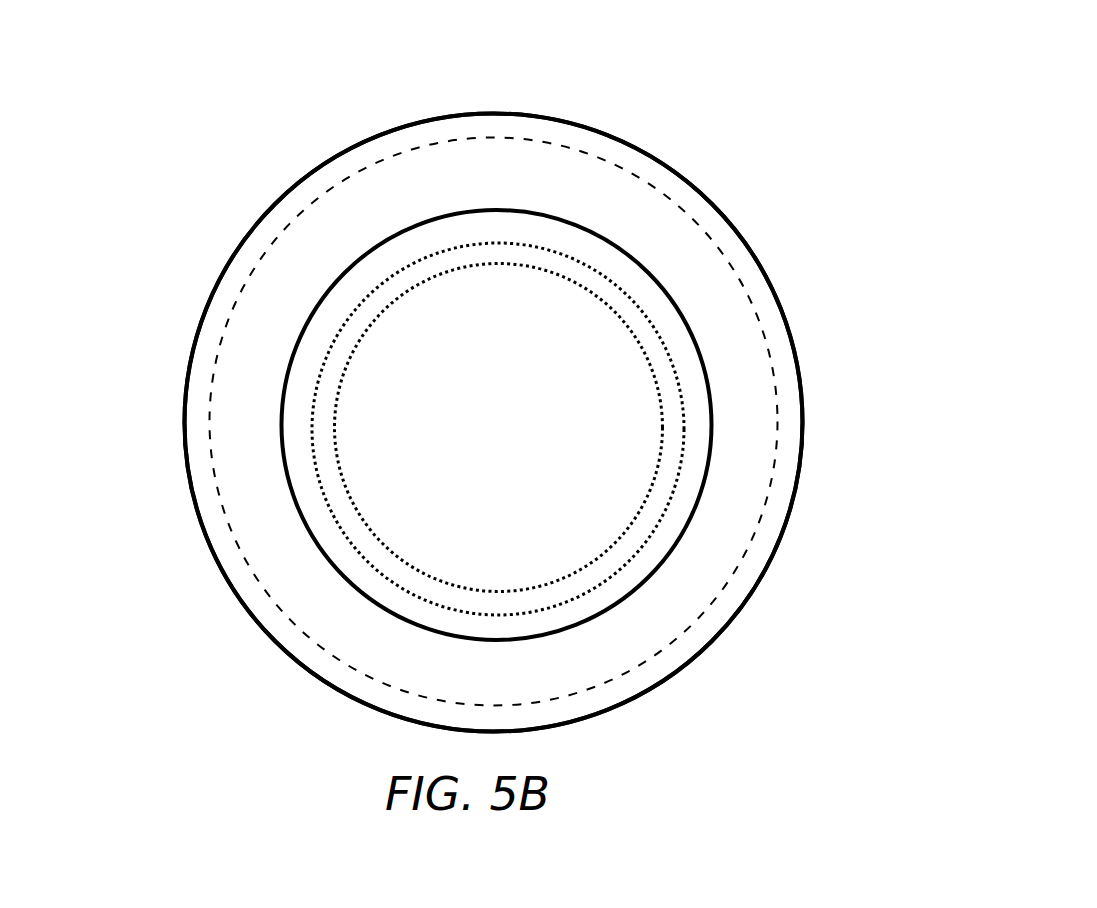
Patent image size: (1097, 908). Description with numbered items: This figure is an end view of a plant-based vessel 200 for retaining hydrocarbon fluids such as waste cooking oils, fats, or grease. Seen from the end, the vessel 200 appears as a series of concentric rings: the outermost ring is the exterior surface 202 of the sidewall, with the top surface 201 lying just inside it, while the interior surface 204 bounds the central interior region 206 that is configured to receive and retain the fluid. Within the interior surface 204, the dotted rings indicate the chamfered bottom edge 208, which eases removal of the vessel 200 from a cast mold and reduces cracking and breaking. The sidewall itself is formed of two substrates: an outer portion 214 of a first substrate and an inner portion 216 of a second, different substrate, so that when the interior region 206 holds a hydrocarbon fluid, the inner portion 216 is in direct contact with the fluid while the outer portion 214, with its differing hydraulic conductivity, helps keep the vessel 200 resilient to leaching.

The vessel 200 is at (495, 403).
The top surface 201 is at (233, 350).
The exterior surface 202 is at (184, 462).
The interior surface 204 is at (298, 527).
The interior region 206 is at (532, 327).
The bottom edge 208 is at (672, 482).
The outer portion 214 is at (790, 357).
The inner portion 216 is at (728, 302).